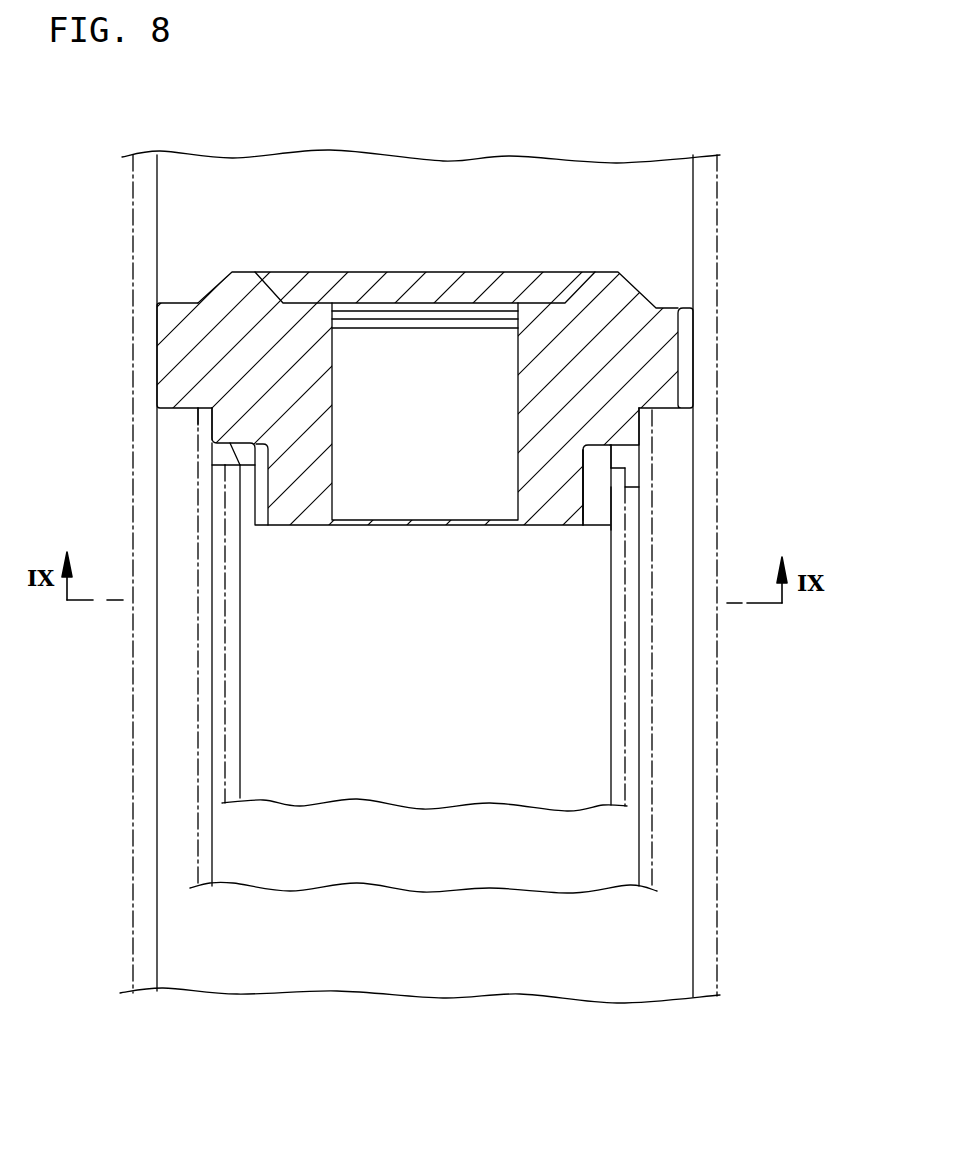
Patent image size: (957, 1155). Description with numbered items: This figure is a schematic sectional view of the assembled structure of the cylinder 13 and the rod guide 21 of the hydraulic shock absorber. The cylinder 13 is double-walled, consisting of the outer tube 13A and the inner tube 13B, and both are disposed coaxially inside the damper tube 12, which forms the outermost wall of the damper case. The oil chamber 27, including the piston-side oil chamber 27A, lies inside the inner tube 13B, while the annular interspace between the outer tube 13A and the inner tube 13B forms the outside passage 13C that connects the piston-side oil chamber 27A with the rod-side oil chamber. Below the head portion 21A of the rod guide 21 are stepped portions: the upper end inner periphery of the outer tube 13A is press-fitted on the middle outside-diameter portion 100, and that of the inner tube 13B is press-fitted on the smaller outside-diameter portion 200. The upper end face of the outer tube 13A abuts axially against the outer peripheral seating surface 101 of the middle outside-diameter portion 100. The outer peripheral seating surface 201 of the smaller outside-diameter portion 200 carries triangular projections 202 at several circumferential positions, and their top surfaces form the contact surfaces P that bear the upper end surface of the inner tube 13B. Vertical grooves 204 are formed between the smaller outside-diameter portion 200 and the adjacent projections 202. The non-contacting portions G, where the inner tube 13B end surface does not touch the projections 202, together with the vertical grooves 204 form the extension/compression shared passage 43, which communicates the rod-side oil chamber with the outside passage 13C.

The damper tube 12 is at (131, 234).
The cylinder 13 is at (349, 650).
The outer tube 13A is at (197, 717).
The inner tube 13B is at (225, 748).
The outside passage 13C is at (217, 785).
The rod guide 21 is at (235, 271).
The head portion 21A is at (157, 367).
The oil chamber 27 is at (540, 718).
The piston-side oil chamber 27A is at (540, 770).
The extension/compression shared passage 43 is at (594, 462).
The middle outside-diameter portion 100 is at (210, 426).
The outer peripheral seating surface 101 is at (187, 409).
The smaller outside-diameter portion 200 is at (613, 508).
The outer peripheral seating surface 201 is at (638, 448).
The projections 202 is at (625, 460).
The vertical grooves 204 is at (589, 498).
The non-contacting portions G is at (237, 467).
The contact surfaces P is at (633, 490).